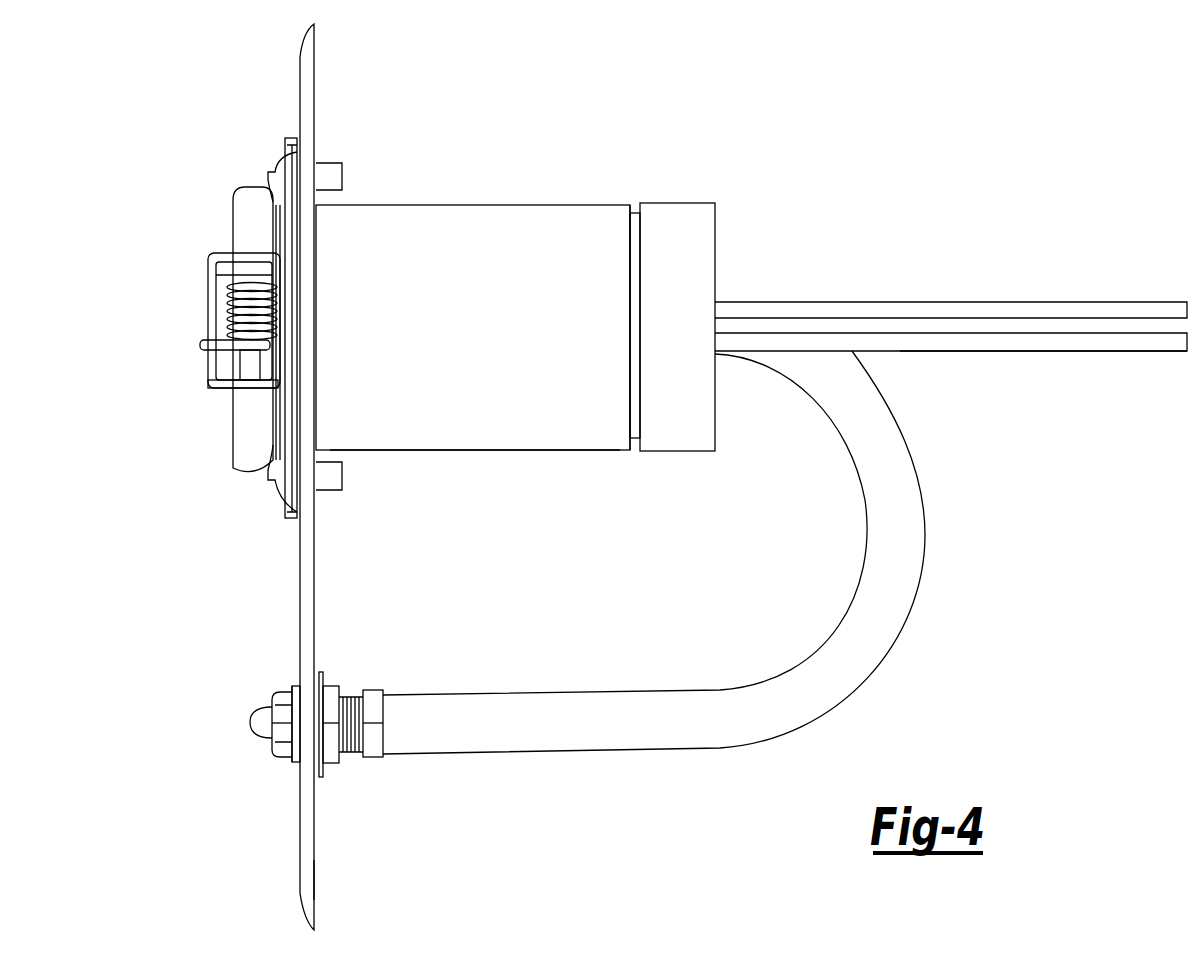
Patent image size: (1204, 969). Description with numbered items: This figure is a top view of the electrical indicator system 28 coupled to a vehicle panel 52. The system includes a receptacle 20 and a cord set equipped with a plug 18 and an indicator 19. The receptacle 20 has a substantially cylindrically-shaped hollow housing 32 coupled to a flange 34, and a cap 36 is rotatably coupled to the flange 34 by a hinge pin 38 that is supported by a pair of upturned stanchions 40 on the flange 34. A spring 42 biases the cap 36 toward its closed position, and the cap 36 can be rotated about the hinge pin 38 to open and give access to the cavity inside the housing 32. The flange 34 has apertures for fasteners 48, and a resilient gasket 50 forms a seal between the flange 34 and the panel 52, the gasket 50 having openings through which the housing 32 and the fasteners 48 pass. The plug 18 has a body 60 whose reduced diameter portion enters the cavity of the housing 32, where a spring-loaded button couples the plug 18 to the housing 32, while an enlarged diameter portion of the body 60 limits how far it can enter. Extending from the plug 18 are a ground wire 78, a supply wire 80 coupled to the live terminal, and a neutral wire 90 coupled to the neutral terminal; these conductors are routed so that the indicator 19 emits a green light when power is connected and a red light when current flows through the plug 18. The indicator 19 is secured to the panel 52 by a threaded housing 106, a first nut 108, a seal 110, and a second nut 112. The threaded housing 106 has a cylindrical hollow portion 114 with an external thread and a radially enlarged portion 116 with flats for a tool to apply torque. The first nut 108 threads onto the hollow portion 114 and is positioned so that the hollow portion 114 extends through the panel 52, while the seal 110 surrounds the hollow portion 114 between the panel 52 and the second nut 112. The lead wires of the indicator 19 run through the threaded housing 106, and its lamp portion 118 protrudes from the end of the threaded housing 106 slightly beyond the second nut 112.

The plug 18 is at (654, 484).
The indicator 19 is at (281, 670).
The receptacle 20 is at (419, 196).
The electrical indicator system 28 is at (609, 113).
The housing 32 is at (483, 451).
The flange 34 is at (289, 138).
The cap 36 is at (233, 200).
The hinge pin 38 is at (250, 363).
The upturned stanchions 40 is at (233, 386).
The spring 42 is at (228, 298).
The fasteners 48 is at (272, 490).
The gasket 50 is at (297, 136).
The panel 52 is at (310, 863).
The body 60 is at (672, 202).
The ground wire 78 is at (1040, 330).
The supply wire 80 is at (1087, 358).
The neutral wire 90 is at (1003, 310).
The threaded housing 106 is at (297, 726).
The first nut 108 is at (330, 690).
The seal 110 is at (296, 763).
The second nut 112 is at (275, 693).
The hollow portion 114 is at (355, 752).
The radially enlarged portion 116 is at (378, 690).
The lamp portion 118 is at (252, 722).